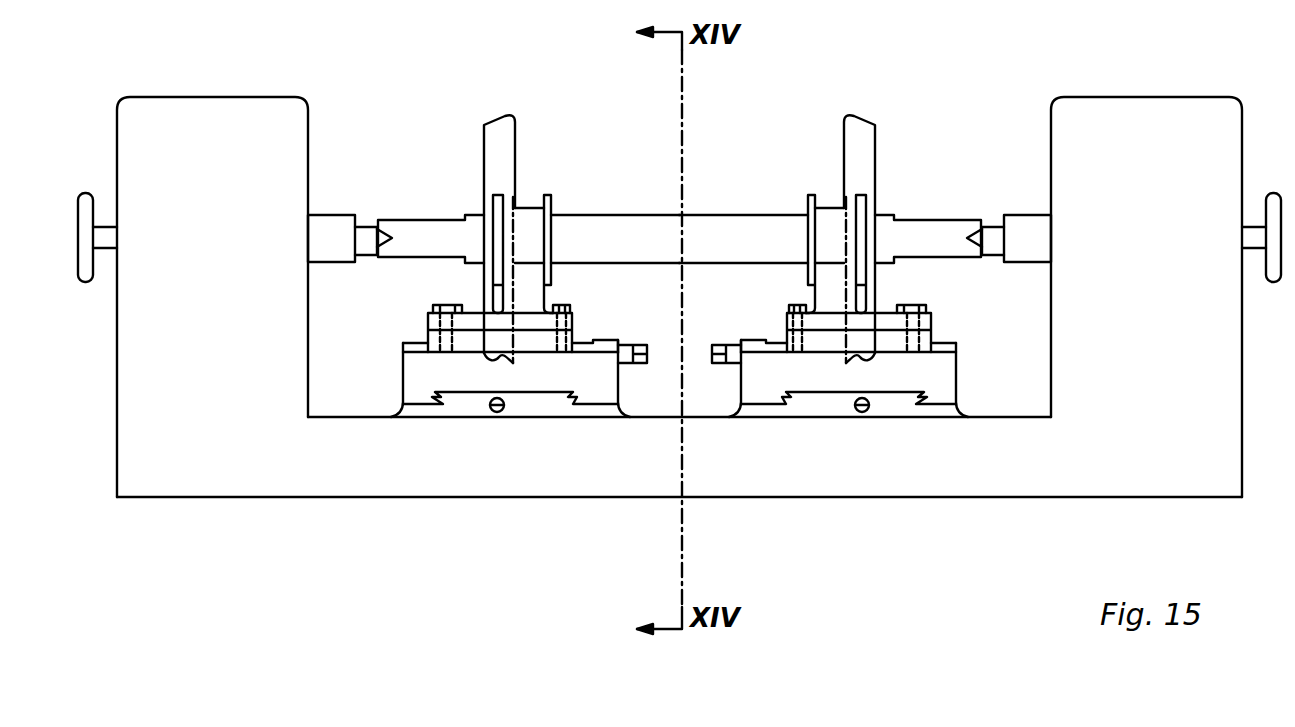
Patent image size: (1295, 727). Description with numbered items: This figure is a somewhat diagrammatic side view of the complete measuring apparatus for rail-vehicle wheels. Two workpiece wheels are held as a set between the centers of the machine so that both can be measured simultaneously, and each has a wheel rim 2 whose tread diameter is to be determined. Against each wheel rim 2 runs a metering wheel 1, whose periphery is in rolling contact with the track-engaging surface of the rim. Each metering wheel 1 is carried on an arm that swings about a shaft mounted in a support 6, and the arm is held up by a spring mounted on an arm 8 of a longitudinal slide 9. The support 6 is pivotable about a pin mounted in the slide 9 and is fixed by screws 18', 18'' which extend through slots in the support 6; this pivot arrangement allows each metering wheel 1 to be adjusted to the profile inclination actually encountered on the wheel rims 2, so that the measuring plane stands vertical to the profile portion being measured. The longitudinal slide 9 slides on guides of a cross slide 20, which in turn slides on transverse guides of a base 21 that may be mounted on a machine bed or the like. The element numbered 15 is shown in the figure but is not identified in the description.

The metering wheel 1 is at (497, 215).
The wheel rim 2 is at (504, 130).
The support 6 is at (470, 320).
The arm 8 is at (527, 225).
The longitudinal slide 9 is at (468, 345).
The flange ring 15 is at (548, 210).
The screw 18' is at (601, 315).
The screw 18'' is at (421, 309).
The cross slide 20 is at (572, 362).
The base 21 is at (462, 405).